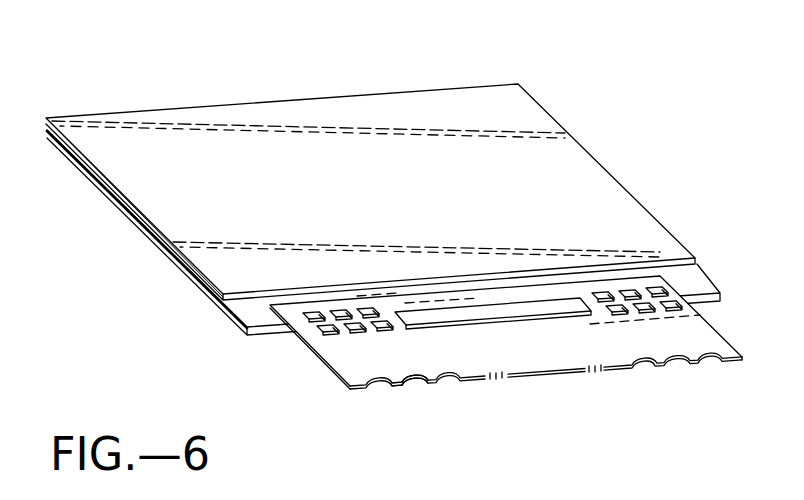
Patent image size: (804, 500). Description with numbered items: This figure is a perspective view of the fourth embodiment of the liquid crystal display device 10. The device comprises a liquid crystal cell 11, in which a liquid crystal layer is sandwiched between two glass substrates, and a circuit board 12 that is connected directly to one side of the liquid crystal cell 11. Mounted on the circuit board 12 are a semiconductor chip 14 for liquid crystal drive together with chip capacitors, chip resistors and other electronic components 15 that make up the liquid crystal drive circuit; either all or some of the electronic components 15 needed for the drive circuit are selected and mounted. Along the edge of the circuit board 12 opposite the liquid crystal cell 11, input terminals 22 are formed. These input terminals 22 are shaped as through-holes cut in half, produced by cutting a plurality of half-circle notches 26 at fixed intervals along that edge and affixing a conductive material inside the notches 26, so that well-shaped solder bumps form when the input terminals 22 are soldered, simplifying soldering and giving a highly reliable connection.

The liquid crystal display device 10 is at (440, 77).
The liquid crystal cell 11 is at (593, 165).
The circuit board 12 is at (506, 326).
The semiconductor chip 14 is at (435, 318).
The electronic components 15 is at (632, 294).
The input terminals 22 is at (418, 384).
The half-circle notches 26 is at (408, 388).